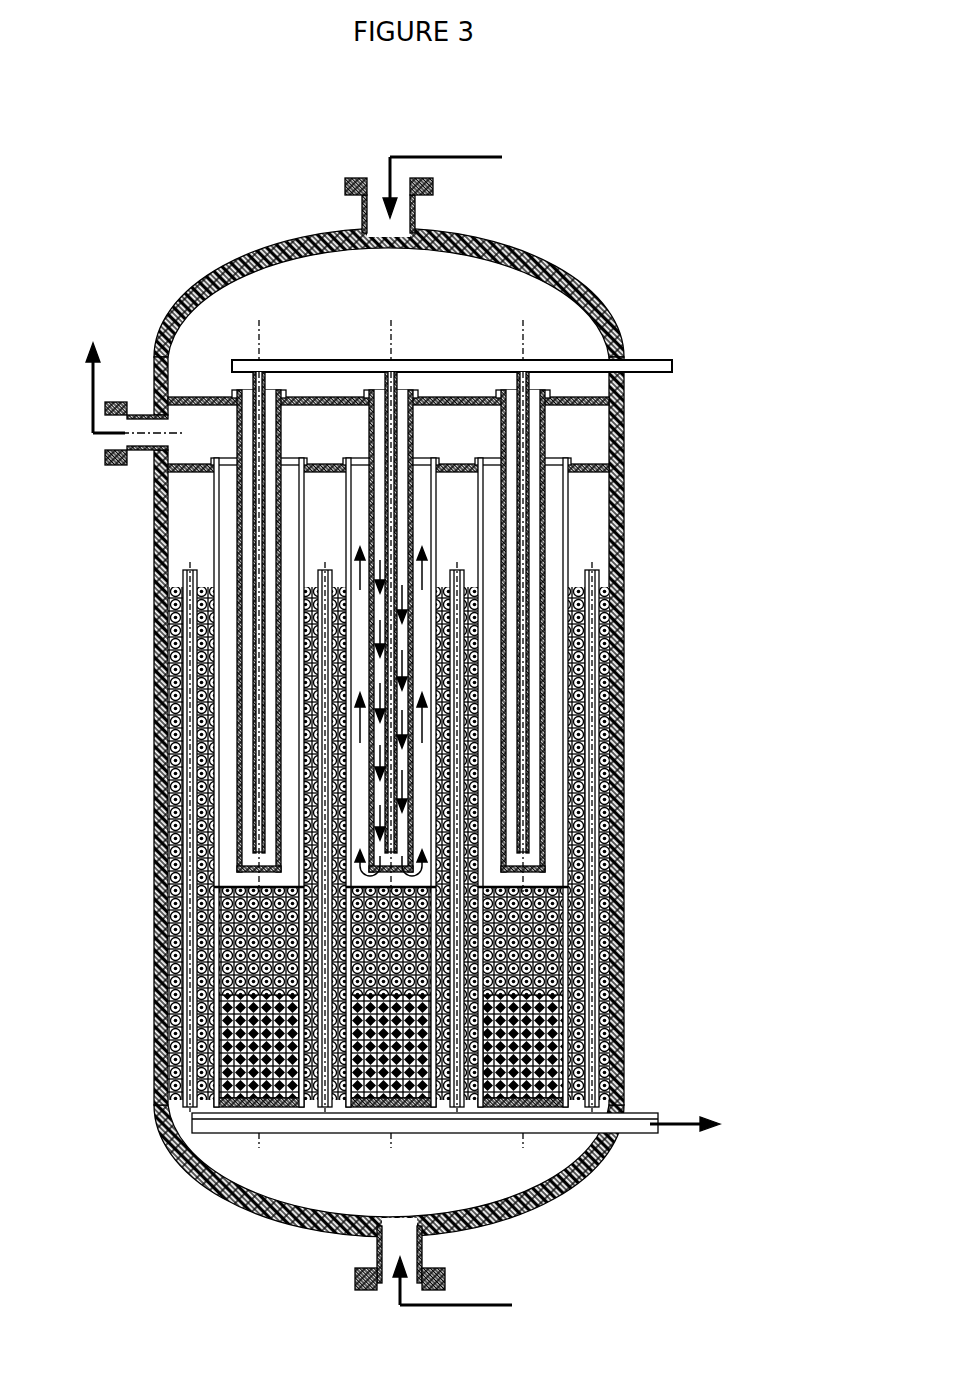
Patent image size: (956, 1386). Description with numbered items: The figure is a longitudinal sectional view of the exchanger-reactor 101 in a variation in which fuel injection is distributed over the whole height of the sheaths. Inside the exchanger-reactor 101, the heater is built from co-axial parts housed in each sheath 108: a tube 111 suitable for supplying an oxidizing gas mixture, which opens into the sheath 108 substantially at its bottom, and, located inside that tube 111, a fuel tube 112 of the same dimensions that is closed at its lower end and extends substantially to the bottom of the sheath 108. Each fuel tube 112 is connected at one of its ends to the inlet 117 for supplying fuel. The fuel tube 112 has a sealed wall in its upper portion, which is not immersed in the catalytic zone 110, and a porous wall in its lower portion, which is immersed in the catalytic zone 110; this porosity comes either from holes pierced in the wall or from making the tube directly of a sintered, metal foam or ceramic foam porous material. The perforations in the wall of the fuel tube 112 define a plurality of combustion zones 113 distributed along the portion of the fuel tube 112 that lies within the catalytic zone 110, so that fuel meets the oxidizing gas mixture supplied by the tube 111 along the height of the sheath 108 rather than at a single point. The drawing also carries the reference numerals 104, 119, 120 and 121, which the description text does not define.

The exchanger-reactor 101 is at (648, 560).
The catalyst support / bottom plate 104 is at (568, 1095).
The sheath 108 is at (588, 777).
The catalytic zone 110 is at (590, 917).
The tube for supplying oxidizing gas mixture 111 is at (548, 697).
The fuel tube 112 is at (532, 458).
The combustion zones 113 is at (385, 648).
The inlet for supplying fuel 117 is at (573, 358).
The space between tubesheets 119 is at (588, 525).
The inlet / upper tubesheet 120 is at (625, 398).
The side outlet nozzle 121 is at (157, 473).